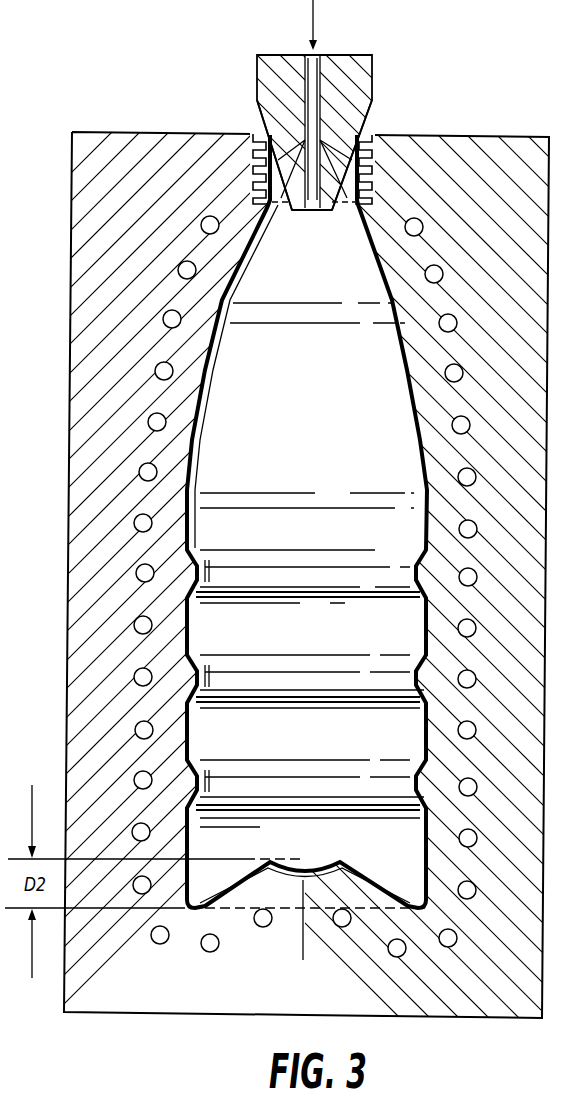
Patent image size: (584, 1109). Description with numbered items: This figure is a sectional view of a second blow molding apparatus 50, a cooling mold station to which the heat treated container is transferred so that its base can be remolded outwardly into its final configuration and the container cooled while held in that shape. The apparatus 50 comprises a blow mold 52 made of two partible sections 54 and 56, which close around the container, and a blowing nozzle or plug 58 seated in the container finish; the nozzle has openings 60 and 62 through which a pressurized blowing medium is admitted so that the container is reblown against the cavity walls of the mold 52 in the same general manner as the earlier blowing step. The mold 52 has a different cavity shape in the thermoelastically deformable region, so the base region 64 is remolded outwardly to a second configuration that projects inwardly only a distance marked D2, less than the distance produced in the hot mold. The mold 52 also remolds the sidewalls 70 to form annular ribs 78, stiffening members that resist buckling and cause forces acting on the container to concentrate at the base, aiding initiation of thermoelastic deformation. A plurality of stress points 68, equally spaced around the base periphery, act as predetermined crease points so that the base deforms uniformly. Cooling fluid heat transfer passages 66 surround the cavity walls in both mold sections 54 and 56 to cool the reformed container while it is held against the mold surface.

The second blow molding apparatus 50 is at (357, 129).
The blow mold 52 is at (292, 543).
The partible mold section 54 is at (146, 142).
The partible mold section 56 is at (540, 175).
The blowing nozzle or plug 58 is at (270, 102).
The opening 60 is at (315, 212).
The opening 62 is at (368, 133).
The base region 64 is at (306, 868).
The cooling fluid heat transfer passages 66 is at (461, 380).
The stress points 68 is at (228, 893).
The sidewalls 70 is at (307, 521).
The annular ribs 78 is at (412, 570).